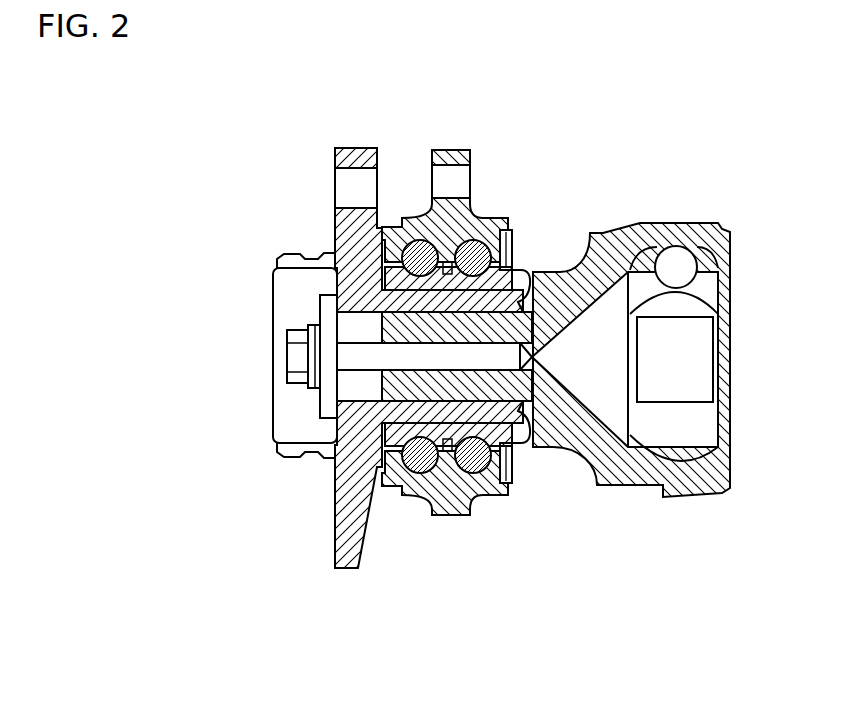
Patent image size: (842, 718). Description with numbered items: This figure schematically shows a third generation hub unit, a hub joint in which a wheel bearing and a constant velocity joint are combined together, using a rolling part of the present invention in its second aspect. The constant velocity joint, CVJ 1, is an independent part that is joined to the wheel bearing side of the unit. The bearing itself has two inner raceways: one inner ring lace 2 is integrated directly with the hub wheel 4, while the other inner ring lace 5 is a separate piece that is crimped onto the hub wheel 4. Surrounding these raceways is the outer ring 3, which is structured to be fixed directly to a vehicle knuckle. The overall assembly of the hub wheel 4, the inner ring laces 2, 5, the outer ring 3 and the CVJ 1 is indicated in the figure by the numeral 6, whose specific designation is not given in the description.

The CVJ 1 is at (650, 483).
The inner ring lace 2 is at (518, 266).
The outer ring 3 is at (447, 152).
The hub wheel 4 is at (357, 157).
The inner ring lace 5 is at (387, 437).
The bearing device for driving wheel 6 is at (495, 165).